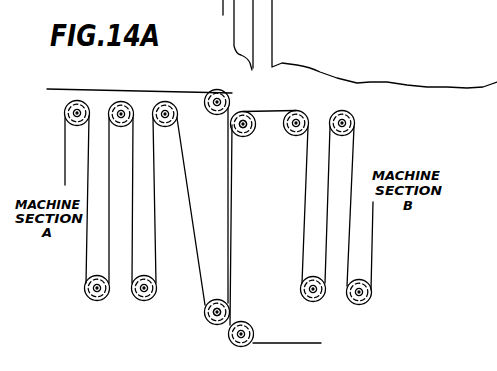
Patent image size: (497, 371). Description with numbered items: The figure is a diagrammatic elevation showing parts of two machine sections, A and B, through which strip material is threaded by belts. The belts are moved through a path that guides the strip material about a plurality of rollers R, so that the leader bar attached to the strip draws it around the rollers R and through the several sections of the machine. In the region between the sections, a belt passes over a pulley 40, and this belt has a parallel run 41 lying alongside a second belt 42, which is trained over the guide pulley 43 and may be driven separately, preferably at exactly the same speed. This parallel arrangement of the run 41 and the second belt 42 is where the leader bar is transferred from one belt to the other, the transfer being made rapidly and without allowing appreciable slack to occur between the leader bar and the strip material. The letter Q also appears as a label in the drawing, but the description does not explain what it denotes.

The pulley 40 is at (208, 321).
The parallel run 41 is at (219, 215).
The second belt 42 is at (232, 179).
The guide pulley 43 is at (246, 115).
The rollers R is at (207, 110).
The roller shafts Q is at (250, 126).